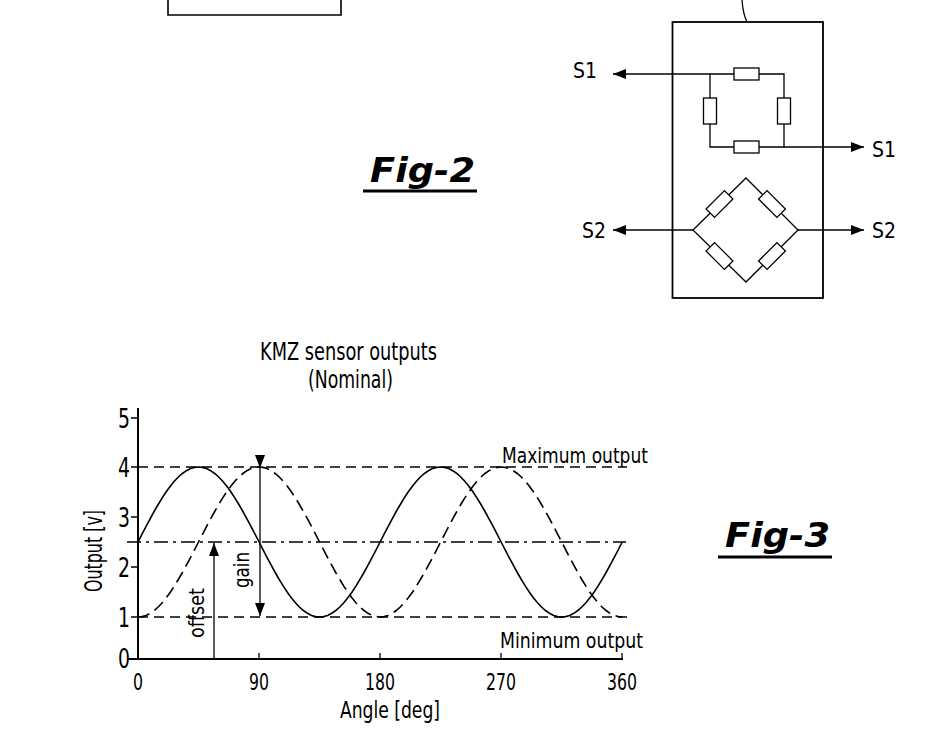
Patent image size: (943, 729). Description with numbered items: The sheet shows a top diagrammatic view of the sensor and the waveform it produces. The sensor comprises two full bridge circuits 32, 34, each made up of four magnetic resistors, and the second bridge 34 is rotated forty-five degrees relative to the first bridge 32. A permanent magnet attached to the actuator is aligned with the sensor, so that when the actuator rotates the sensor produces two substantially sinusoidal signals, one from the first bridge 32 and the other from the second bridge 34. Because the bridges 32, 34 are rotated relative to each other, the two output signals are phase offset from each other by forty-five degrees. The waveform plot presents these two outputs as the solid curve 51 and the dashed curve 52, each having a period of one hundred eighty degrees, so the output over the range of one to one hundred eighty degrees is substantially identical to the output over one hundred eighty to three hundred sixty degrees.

In FIG. 2, the first full bridge circuit 32 is at (691, 113).
In FIG. 2, the second full bridge circuit 34 is at (685, 262).
In FIG. 3, the first sensor output signal (S1) 51 is at (160, 500).
In FIG. 3, the second sensor output signal (S2) 52 is at (170, 592).